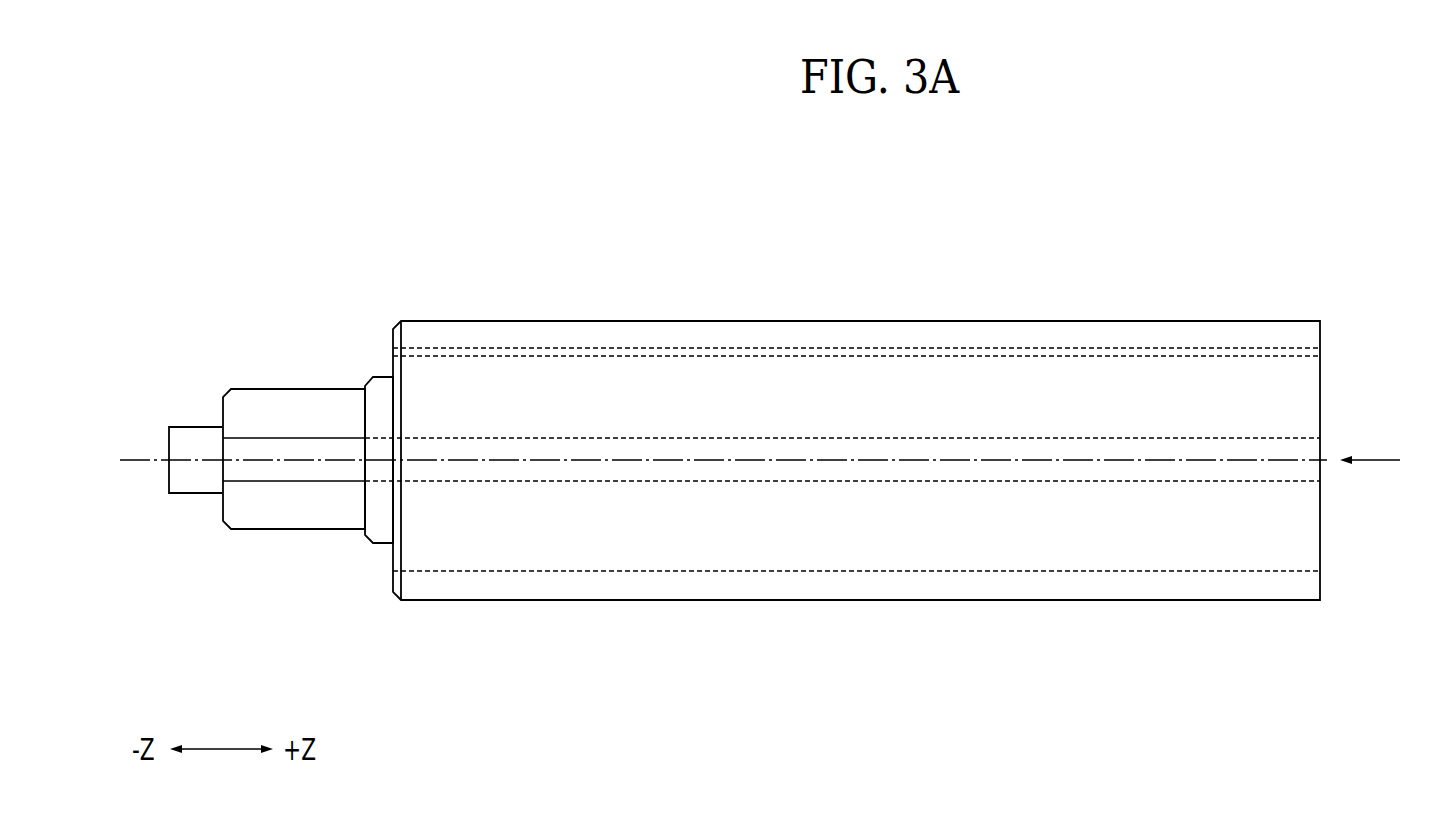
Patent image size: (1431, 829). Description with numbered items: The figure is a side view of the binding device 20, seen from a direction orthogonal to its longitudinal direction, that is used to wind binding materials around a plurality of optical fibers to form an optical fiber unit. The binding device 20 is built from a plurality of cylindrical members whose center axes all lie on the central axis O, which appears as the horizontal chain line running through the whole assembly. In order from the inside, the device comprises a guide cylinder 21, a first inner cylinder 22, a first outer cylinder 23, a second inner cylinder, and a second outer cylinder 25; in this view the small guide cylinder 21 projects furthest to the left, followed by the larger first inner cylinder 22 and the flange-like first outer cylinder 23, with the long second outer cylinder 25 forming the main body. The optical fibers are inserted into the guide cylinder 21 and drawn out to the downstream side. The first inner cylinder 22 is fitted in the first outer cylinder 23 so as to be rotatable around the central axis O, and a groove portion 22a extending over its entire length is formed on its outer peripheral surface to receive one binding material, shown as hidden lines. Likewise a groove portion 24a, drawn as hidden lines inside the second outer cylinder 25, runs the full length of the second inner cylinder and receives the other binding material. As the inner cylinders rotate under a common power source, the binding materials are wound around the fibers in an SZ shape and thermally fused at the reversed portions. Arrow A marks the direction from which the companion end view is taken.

The binding device 20 is at (473, 293).
The guide cylinder 21 is at (192, 427).
The first inner cylinder 22 is at (258, 392).
The groove portion 22a is at (712, 440).
The first outer cylinder 23 is at (383, 377).
The groove portion 24a is at (575, 355).
The second outer cylinder 25 is at (882, 321).
The central axis O is at (133, 458).
The arrow A is at (1382, 460).